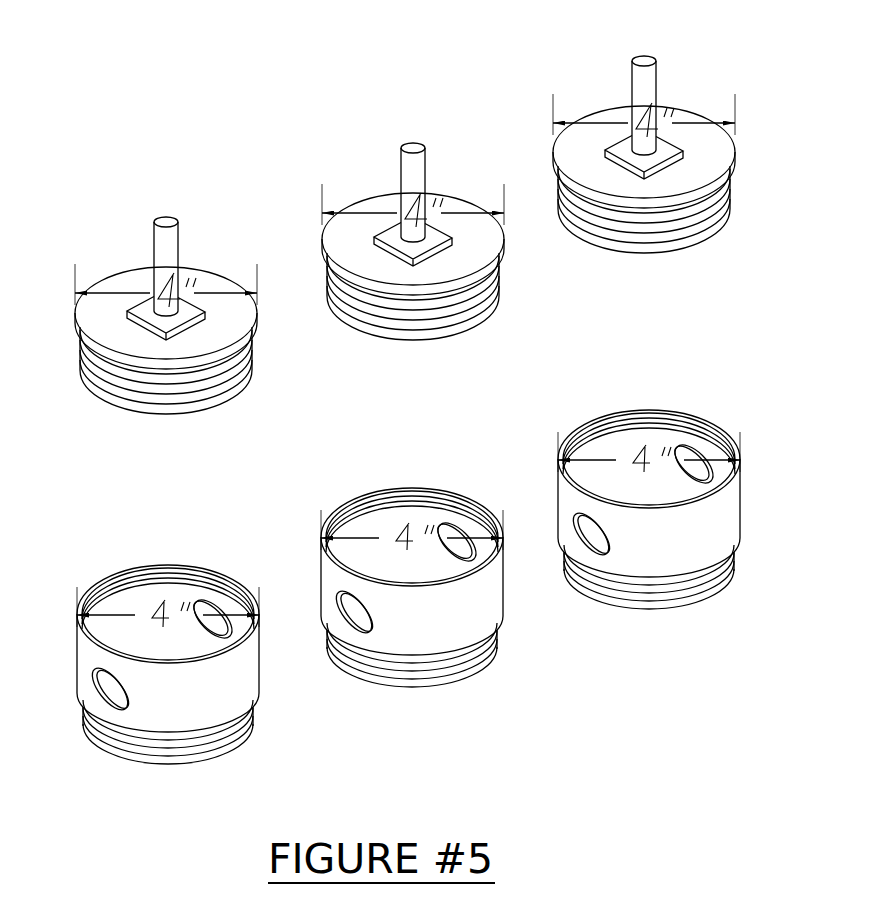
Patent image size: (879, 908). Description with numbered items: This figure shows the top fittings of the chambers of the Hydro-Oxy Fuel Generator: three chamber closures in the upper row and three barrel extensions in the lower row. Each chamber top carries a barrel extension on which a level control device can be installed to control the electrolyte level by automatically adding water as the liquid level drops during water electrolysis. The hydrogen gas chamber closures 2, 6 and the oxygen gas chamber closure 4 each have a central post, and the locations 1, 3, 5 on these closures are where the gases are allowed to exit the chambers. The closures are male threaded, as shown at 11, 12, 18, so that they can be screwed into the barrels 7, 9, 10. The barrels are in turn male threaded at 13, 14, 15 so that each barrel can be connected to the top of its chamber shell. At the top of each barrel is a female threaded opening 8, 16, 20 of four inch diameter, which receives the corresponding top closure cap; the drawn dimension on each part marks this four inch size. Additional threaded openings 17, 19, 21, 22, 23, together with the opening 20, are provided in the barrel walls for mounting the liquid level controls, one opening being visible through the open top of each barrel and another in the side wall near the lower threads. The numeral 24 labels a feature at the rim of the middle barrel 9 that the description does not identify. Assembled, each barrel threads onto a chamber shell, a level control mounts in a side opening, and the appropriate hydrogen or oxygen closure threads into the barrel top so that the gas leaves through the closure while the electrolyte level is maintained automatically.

The gas exit 1 is at (150, 267).
The hydrogen gas chamber closure 2 is at (233, 275).
The male thread 12 is at (83, 382).
The gas exit 3 is at (416, 243).
The oxygen gas chamber closure 4 is at (475, 198).
The male thread 18 is at (332, 303).
The gas exit 5 is at (653, 161).
The hydrogen gas chamber closure 6 is at (688, 108).
The male thread 11 is at (560, 218).
The female threaded opening 8 is at (150, 676).
The barrel 10 is at (73, 627).
The female threaded opening 20 is at (185, 587).
The male threaded barrel 14 is at (185, 760).
The threaded opening 17 is at (108, 727).
The barrel 9 is at (396, 599).
The internally threaded rim of second sleeve 24 is at (362, 488).
The threaded opening 21 is at (435, 512).
The male threaded barrel 13 is at (430, 682).
The threaded opening 19 is at (350, 648).
The barrel 7 is at (630, 522).
The female threaded opening 16 is at (602, 417).
The threaded opening 23 is at (682, 438).
The male threaded barrel 15 is at (667, 603).
The threaded opening 22 is at (590, 573).